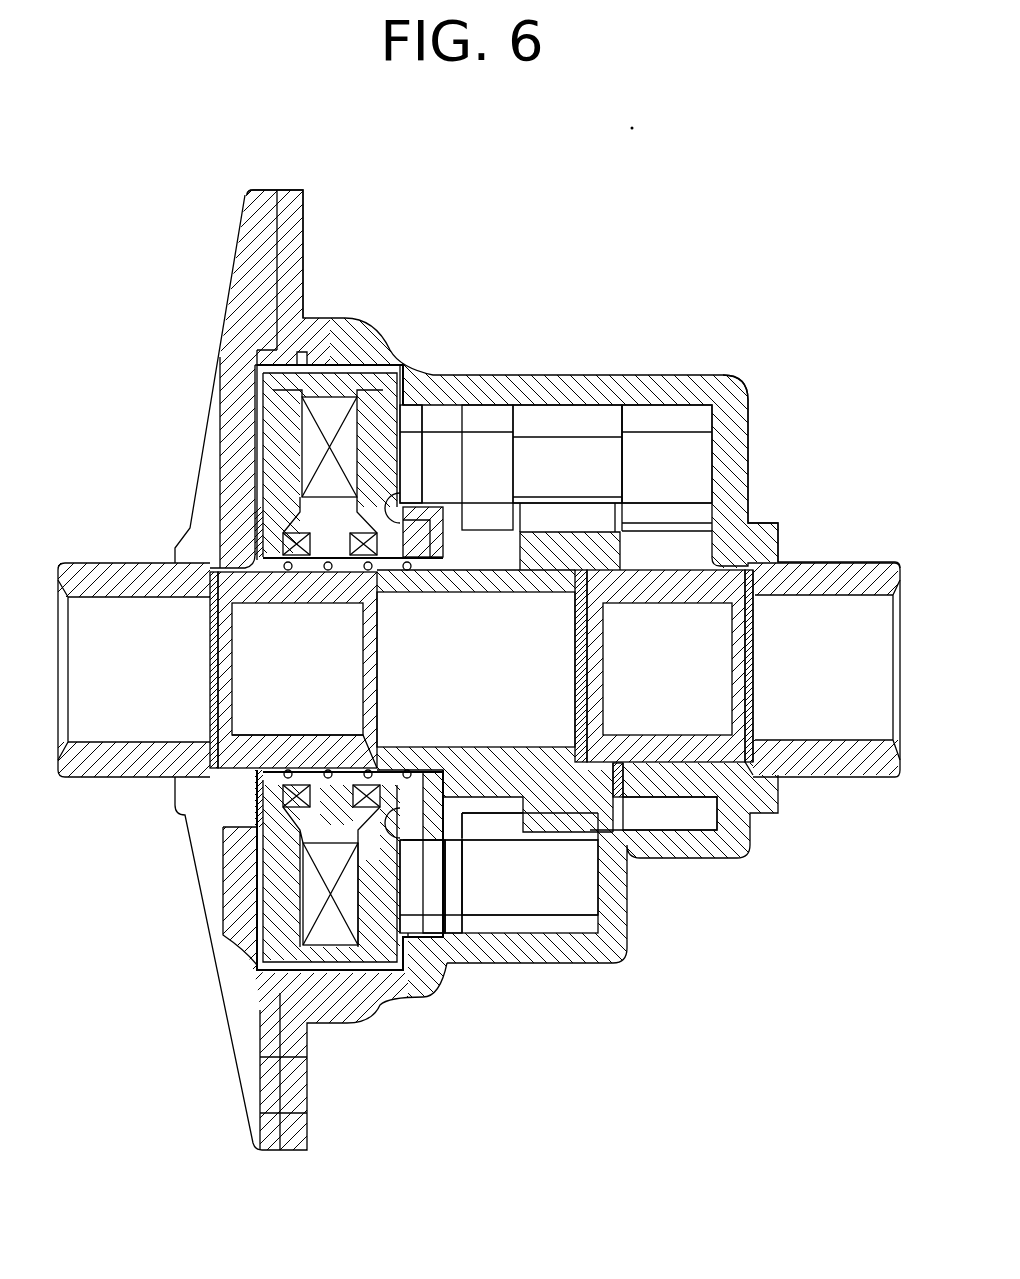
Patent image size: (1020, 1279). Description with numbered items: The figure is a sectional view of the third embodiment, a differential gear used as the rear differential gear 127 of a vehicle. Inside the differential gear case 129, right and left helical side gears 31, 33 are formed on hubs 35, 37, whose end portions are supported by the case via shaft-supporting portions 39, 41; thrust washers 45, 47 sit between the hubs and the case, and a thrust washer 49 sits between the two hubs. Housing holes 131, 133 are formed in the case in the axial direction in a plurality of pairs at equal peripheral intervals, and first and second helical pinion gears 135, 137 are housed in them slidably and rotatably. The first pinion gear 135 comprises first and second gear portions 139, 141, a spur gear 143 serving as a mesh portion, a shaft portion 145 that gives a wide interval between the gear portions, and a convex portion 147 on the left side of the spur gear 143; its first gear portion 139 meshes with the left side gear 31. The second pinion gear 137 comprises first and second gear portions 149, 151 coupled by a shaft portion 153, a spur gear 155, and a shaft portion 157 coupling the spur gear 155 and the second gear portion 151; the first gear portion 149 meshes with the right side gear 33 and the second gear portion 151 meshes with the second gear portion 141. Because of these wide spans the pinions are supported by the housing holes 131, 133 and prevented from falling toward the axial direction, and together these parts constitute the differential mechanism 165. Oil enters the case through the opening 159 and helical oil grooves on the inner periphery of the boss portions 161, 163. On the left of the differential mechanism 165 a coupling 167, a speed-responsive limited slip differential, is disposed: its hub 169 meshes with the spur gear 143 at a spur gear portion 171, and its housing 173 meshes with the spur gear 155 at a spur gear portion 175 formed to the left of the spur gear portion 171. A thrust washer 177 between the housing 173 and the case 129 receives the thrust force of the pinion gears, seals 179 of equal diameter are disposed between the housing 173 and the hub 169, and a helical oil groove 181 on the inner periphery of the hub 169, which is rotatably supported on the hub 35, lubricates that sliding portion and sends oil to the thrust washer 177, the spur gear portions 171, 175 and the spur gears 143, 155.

The rear differential gear 127 is at (735, 188).
The differential gear case 129 is at (280, 188).
The housing hole 131 is at (542, 935).
The housing hole 133 is at (562, 405).
The first helical pinion gear 135 is at (600, 937).
The second helical pinion gear 137 is at (714, 395).
The first gear portion 139 is at (560, 930).
The second gear portion 141 is at (486, 912).
The spur gear 143 is at (420, 905).
The shaft portion 145 is at (462, 910).
The convex portion 147 is at (408, 905).
The first gear portion 149 is at (662, 428).
The second gear portion 151 is at (487, 428).
The shaft portion 153 is at (590, 483).
The spur gear 155 is at (415, 400).
The shaft portion 157 is at (443, 440).
The opening 159 is at (215, 855).
The boss portion 161 is at (108, 558).
The boss portion 163 is at (846, 560).
The differential mechanism 165 is at (672, 336).
The coupling 167 is at (203, 395).
The hub 169 is at (337, 574).
The spur gear portion 171 is at (430, 518).
The housing 173 is at (362, 370).
The spur gear portion 175 is at (413, 790).
The thrust washer 177 is at (262, 574).
The seal 179 is at (382, 520).
The helical oil groove 181 is at (322, 770).
The left helical side gear 31 is at (552, 545).
The right helical side gear 33 is at (672, 812).
The hub 35 is at (516, 580).
The hub 37 is at (626, 590).
The shaft-supporting portion 39 is at (232, 770).
The shaft-supporting portion 41 is at (718, 758).
The thrust washer 45 is at (212, 740).
The thrust washer 47 is at (756, 730).
The thrust washer 49 is at (618, 768).